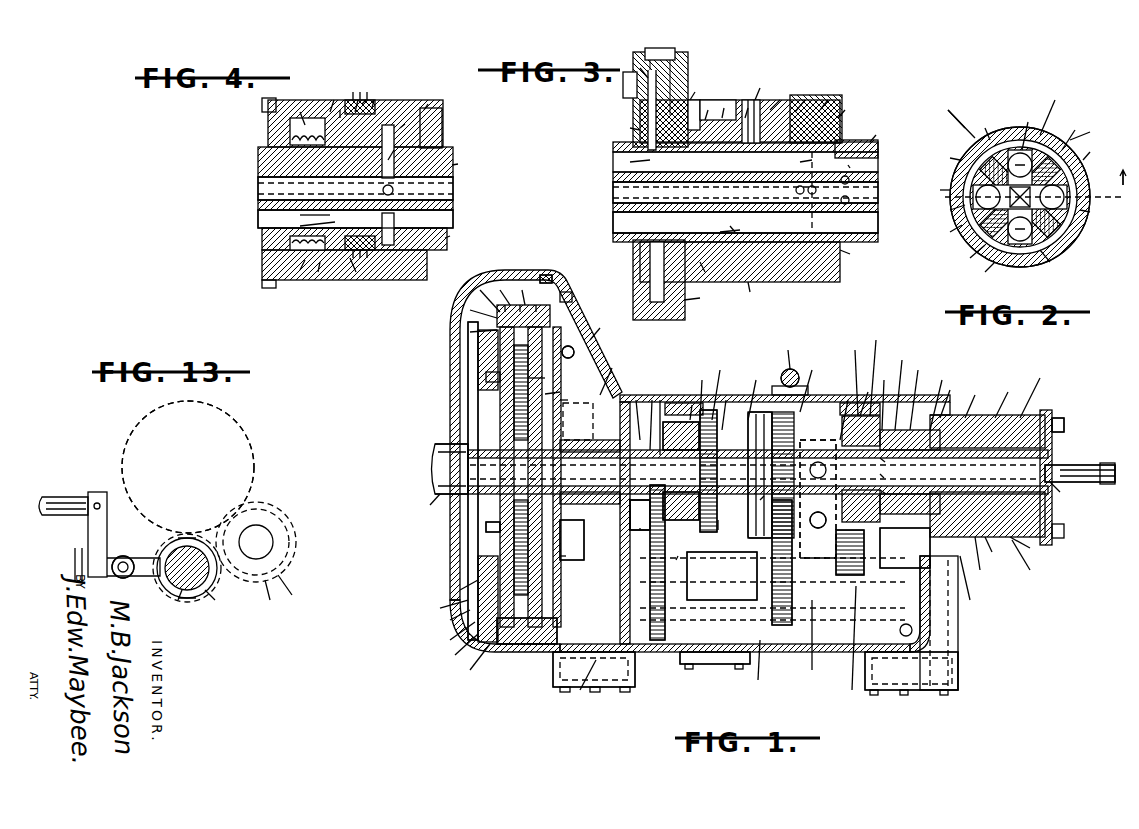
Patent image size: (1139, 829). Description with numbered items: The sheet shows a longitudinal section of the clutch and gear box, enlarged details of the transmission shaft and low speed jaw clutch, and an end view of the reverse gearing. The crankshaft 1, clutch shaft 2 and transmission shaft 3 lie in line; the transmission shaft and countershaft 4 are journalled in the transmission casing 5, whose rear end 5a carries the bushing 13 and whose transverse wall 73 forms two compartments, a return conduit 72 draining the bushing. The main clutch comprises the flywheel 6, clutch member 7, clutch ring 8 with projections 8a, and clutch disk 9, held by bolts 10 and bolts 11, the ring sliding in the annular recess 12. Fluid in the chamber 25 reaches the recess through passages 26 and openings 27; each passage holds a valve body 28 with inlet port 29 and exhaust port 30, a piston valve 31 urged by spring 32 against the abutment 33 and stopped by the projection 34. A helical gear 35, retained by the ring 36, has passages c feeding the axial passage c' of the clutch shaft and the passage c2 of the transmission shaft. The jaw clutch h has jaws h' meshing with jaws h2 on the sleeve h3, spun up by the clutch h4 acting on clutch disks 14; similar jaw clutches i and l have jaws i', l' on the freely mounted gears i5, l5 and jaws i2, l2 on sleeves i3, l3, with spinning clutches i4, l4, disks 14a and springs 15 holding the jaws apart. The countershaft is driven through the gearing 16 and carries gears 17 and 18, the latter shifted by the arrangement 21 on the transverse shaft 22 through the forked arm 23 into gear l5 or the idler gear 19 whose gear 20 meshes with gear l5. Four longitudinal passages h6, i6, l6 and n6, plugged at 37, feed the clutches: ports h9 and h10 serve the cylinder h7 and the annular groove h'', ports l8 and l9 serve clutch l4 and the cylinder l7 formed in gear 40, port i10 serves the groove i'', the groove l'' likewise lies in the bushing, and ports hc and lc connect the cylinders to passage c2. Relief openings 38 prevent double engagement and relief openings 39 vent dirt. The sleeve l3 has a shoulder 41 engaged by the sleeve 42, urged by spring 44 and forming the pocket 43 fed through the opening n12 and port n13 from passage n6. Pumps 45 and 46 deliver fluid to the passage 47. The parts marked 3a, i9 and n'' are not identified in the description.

In FIG. 1, the crankshaft 1 is at (430, 505).
In FIG. 1, the clutch shaft 2 is at (435, 482).
In FIG. 3, the transmission shaft 3 is at (876, 135).
In FIG. 2, the transmission shaft 3 is at (1090, 152).
In FIG. 1, the transmission shaft 3 is at (726, 400).
In FIG. 2, the countershaft 4 is at (951, 109).
In FIG. 13, the countershaft 4 is at (215, 600).
In FIG. 1, the countershaft 4 is at (755, 669).
In FIG. 4, the transmission casing 5 is at (458, 164).
In FIG. 1, the transmission casing 5 is at (662, 652).
In FIG. 1, the flywheel 6 is at (450, 620).
In FIG. 1, the clutch member 7 is at (560, 340).
In FIG. 1, the clutch ring 8 is at (545, 378).
In FIG. 1, the clutch disk 9 is at (468, 430).
In FIG. 1, the bolts 10 is at (486, 530).
In FIG. 1, the bolts 11 is at (460, 590).
In FIG. 1, the annular recess 12 is at (560, 392).
In FIG. 1, the bushing 13 is at (1008, 392).
In FIG. 3, the clutch disks 14 is at (630, 128).
In FIG. 1, the clutch disks 14 is at (692, 405).
In FIG. 4, the helical spring 15 is at (300, 112).
In FIG. 3, the helical spring 15 is at (705, 272).
In FIG. 1, the helical spring 15 is at (690, 520).
In FIG. 1, the constantly meshed gearing 16 is at (700, 664).
In FIG. 1, the gear 17 is at (782, 625).
In FIG. 13, the gear 18 is at (160, 588).
In FIG. 1, the gear 18 is at (848, 575).
In FIG. 13, the idler gear 19 is at (292, 595).
In FIG. 1, the idler gear 19 is at (814, 649).
In FIG. 13, the gear 20 is at (270, 600).
In FIG. 1, the arm, link and lever arrangement 21 is at (788, 350).
In FIG. 1, the transverse shaft 22 is at (795, 370).
In FIG. 13, the forked arm 23 is at (178, 600).
In FIG. 1, the forked arm 23 is at (850, 651).
In FIG. 1, the fluid chamber 25 is at (450, 640).
In FIG. 1, the fluid passages 26 is at (546, 275).
In FIG. 1, the openings 27 is at (470, 332).
In FIG. 1, the valve body 28 is at (522, 290).
In FIG. 1, the inlet port 29 is at (500, 290).
In FIG. 1, the exhaust port 30 is at (470, 310).
In FIG. 1, the piston valve 31 is at (480, 290).
In FIG. 1, the spring 32 is at (470, 670).
In FIG. 1, the annular abutment 33 is at (455, 655).
In FIG. 1, the projection 34 is at (600, 328).
In FIG. 1, the helical gear 35 is at (612, 368).
In FIG. 1, the ring 36 is at (573, 399).
In FIG. 1, the plug 37 is at (640, 515).
In FIG. 2, the relief openings 38 is at (950, 210).
In FIG. 1, the relief openings 38 is at (942, 380).
In FIG. 1, the relief opening 39 is at (868, 392).
In FIG. 4, the gear 40 is at (428, 104).
In FIG. 3, the gear 40 is at (845, 110).
In FIG. 1, the gear 40 is at (950, 390).
In FIG. 4, the shoulder 41 is at (300, 226).
In FIG. 3, the shoulder 41 is at (780, 100).
In FIG. 4, the sleeve 42 is at (366, 100).
In FIG. 3, the sleeve 42 is at (805, 100).
In FIG. 4, the annular pocket 43 is at (356, 272).
In FIG. 3, the annular pocket 43 is at (750, 292).
In FIG. 4, the spring 44 is at (374, 100).
In FIG. 1, the rotary gear pump 45 is at (625, 680).
In FIG. 1, the rotary gear pump 46 is at (958, 664).
In FIG. 1, the passage 47 is at (912, 630).
In FIG. 1, the return conduit 72 is at (1030, 570).
In FIG. 1, the transverse wall 73 is at (580, 690).
In FIG. 1, the passages c is at (564, 554).
In FIG. 1, the passage c' is at (633, 403).
In FIG. 4, the axial passage c2 is at (355, 188).
In FIG. 3, the axial passage c2 is at (745, 192).
In FIG. 2, the axial passage c2 is at (970, 258).
In FIG. 1, the axial passage c2 is at (652, 400).
In FIG. 1, the jaws h' is at (703, 374).
In FIG. 1, the jaws h2 is at (720, 370).
In FIG. 2, the sleeve h3 is at (1055, 100).
In FIG. 1, the sleeve h3 is at (716, 410).
In FIG. 1, the clutch h4 is at (638, 526).
In FIG. 2, the longitudinal passage h6 is at (1028, 122).
In FIG. 1, the longitudinal passage h6 is at (680, 422).
In FIG. 2, the cylinder h7 is at (1075, 130).
In FIG. 2, the port h9 is at (985, 128).
In FIG. 1, the port h10 is at (1060, 492).
In FIG. 1, the annular groove h'' is at (1040, 383).
In FIG. 2, the port hc is at (1090, 132).
In FIG. 1, the jaw clutch i is at (823, 457).
In FIG. 1, the jaws i' is at (760, 475).
In FIG. 1, the jaws i2 is at (848, 400).
In FIG. 1, the sleeve i3 is at (821, 511).
In FIG. 1, the clutch i4 is at (756, 380).
In FIG. 1, the gear i5 is at (812, 370).
In FIG. 2, the longitudinal passage i6 is at (1050, 262).
In FIG. 1, the hub i9 is at (763, 500).
In FIG. 1, the port i10 is at (992, 552).
In FIG. 1, the annular groove i'' is at (986, 568).
In FIG. 4, the jaw clutch l is at (286, 285).
In FIG. 3, the jaw clutch l is at (700, 100).
In FIG. 1, the jaw clutch l is at (884, 385).
In FIG. 4, the jaws l' is at (341, 67).
In FIG. 3, the jaws l' is at (722, 91).
In FIG. 1, the jaws l' is at (902, 373).
In FIG. 4, the jaws l2 is at (340, 110).
In FIG. 3, the jaws l2 is at (748, 108).
In FIG. 1, the jaws l2 is at (918, 370).
In FIG. 4, the sleeve l3 is at (358, 100).
In FIG. 3, the sleeve l3 is at (760, 88).
In FIG. 3, the clutch l4 is at (640, 68).
In FIG. 1, the clutch l4 is at (855, 350).
In FIG. 3, the gear l5 is at (700, 298).
In FIG. 13, the gear l5 is at (254, 467).
In FIG. 1, the gear l5 is at (876, 340).
In FIG. 3, the longitudinal passage l6 is at (844, 162).
In FIG. 2, the longitudinal passage l6 is at (950, 232).
In FIG. 1, the longitudinal passage l6 is at (883, 494).
In FIG. 4, the cylinder l7 is at (405, 124).
In FIG. 3, the cylinder l7 is at (828, 100).
In FIG. 1, the cylinder l7 is at (905, 555).
In FIG. 3, the port l8 is at (630, 162).
In FIG. 1, the port l8 is at (883, 458).
In FIG. 3, the port l9 is at (800, 162).
In FIG. 1, the annular groove l'' is at (975, 393).
In FIG. 4, the port lc is at (394, 150).
In FIG. 3, the port lc is at (723, 221).
In FIG. 1, the port lc is at (970, 600).
In FIG. 4, the longitudinal passage n6 is at (355, 217).
In FIG. 3, the longitudinal passage n6 is at (745, 222).
In FIG. 2, the longitudinal passage n6 is at (1090, 212).
In FIG. 4, the opening n12 is at (450, 236).
In FIG. 3, the opening n12 is at (850, 254).
In FIG. 4, the port n13 is at (300, 215).
In FIG. 3, the port n13 is at (720, 232).
In FIG. 1, the sleeve n'' is at (1042, 548).
In FIG. 1, the shaft 3a is at (660, 400).
In FIG. 1, the rear end of casing 5a is at (1064, 420).
In FIG. 1, the jaws or projections 8a is at (440, 608).
In FIG. 3, the disks 14a is at (695, 92).